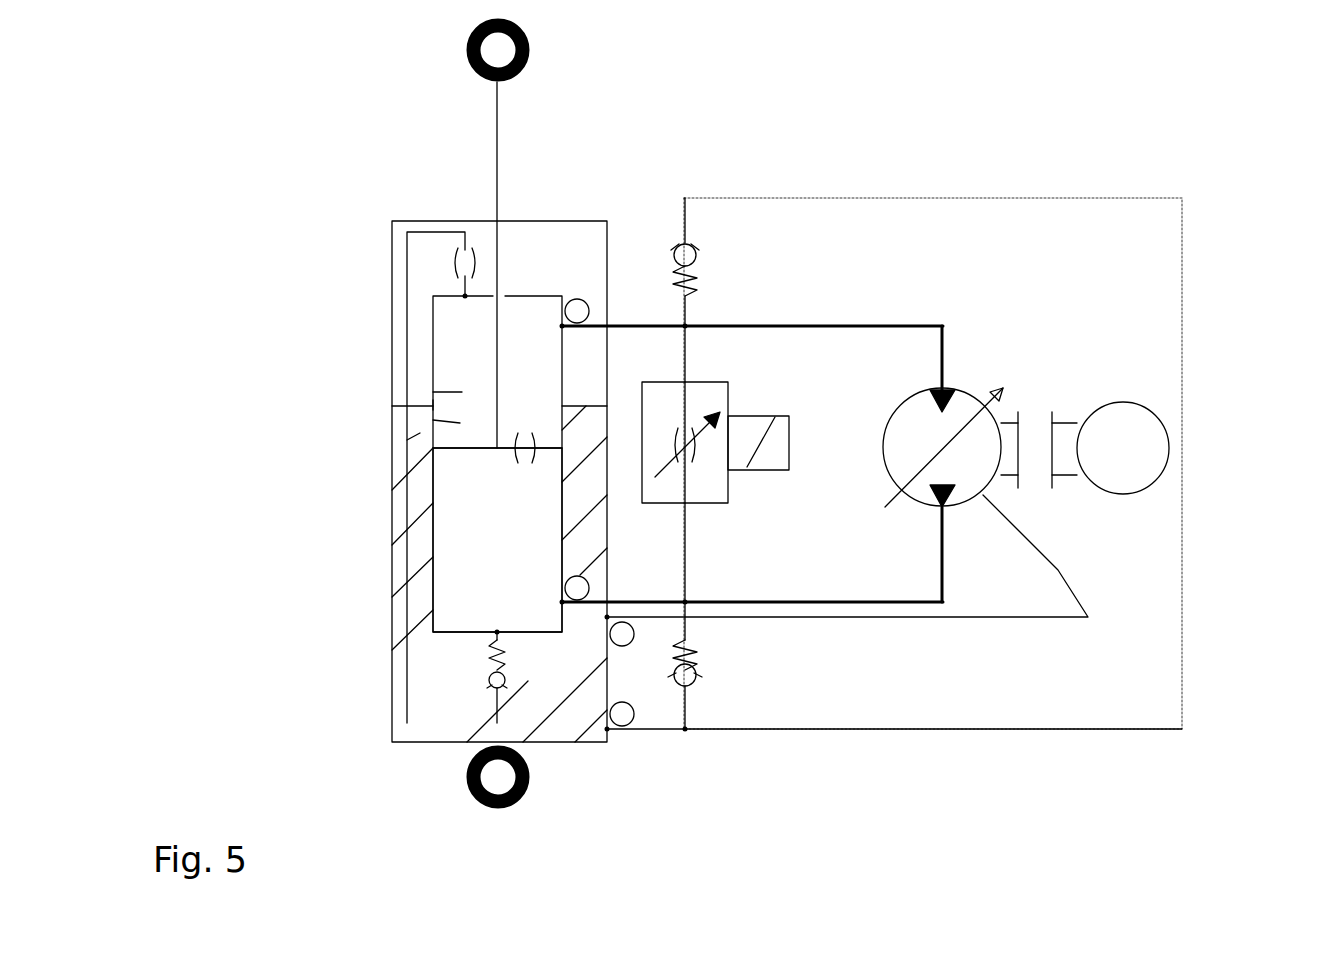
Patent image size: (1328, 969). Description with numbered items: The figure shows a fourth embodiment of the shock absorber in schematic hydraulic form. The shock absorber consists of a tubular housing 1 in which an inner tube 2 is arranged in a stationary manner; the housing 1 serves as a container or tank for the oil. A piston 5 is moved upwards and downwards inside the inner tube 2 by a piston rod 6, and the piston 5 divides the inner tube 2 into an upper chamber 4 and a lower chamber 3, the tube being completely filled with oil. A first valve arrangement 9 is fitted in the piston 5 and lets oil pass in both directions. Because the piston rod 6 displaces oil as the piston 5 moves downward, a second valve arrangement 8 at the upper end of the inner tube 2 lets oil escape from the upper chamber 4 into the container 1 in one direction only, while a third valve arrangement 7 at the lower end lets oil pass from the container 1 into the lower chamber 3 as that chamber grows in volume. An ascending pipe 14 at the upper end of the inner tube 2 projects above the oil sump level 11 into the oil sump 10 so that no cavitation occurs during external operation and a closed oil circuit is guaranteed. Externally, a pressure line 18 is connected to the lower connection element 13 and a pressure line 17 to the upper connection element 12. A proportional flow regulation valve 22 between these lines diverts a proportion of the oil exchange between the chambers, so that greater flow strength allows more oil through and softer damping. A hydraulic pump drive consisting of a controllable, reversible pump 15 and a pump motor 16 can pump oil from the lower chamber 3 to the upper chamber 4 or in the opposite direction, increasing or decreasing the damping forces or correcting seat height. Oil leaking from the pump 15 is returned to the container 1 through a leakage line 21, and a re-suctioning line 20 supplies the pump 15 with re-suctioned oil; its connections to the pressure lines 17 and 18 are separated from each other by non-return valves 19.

The tubular housing 1 is at (530, 518).
The inner tube 2 is at (378, 540).
The lower chamber 3 is at (401, 586).
The upper chamber 4 is at (401, 327).
The piston 5 is at (355, 371).
The piston rod 6 is at (400, 414).
The third valve arrangement 7 is at (348, 728).
The second valve arrangement 8 is at (340, 206).
The first valve arrangement 9 is at (364, 551).
The oil sump 10 is at (327, 435).
The oil sump level 11 is at (345, 384).
The upper connection element 12 is at (752, 223).
The lower connection element 13 is at (752, 710).
The ascending pipe 14 is at (336, 336).
The controllable pump 15 is at (1068, 378).
The pump motor 16 is at (1180, 378).
The pressure line 17 is at (876, 378).
The pressure line 18 is at (852, 709).
The non-return valves 19 is at (925, 457).
The re-suctioning line 20 is at (897, 774).
The leakage line 21 is at (967, 556).
The proportional flow regulation valve 22 is at (854, 301).